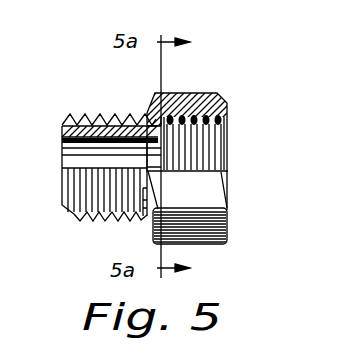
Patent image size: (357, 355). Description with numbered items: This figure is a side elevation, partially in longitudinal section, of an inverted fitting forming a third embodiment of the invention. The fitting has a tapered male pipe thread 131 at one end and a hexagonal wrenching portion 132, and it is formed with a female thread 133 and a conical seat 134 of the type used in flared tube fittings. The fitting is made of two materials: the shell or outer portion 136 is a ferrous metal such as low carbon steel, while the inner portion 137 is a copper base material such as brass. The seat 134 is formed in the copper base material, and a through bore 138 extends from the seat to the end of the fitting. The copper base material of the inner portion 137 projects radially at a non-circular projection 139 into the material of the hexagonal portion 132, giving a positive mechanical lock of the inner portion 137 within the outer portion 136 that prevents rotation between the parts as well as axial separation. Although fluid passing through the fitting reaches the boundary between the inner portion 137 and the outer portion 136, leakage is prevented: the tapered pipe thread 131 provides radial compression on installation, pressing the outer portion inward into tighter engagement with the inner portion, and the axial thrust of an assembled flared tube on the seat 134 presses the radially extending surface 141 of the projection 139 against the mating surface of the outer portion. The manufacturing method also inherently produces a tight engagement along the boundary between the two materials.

The tapered male pipe thread 131 is at (93, 220).
The hexagonal wrenching portion 132 is at (228, 230).
The female thread 133 is at (229, 133).
The conical seat 134 is at (205, 93).
The shell or outer portion 136 is at (156, 106).
The inner portion 137 is at (108, 116).
The through bore 138 is at (62, 143).
The non-circular projection 139 is at (180, 98).
The radially extending surface 141 is at (147, 112).